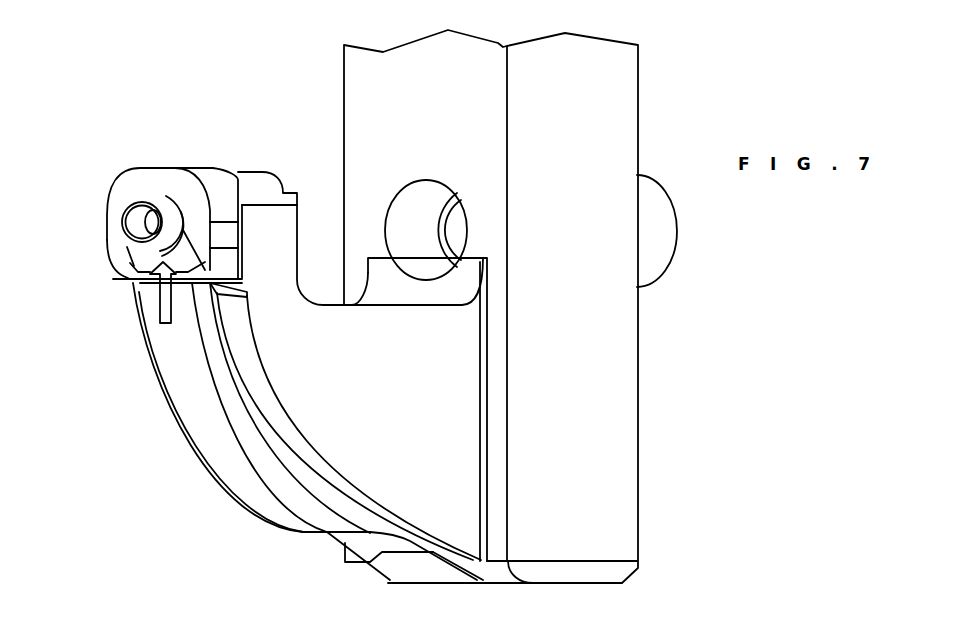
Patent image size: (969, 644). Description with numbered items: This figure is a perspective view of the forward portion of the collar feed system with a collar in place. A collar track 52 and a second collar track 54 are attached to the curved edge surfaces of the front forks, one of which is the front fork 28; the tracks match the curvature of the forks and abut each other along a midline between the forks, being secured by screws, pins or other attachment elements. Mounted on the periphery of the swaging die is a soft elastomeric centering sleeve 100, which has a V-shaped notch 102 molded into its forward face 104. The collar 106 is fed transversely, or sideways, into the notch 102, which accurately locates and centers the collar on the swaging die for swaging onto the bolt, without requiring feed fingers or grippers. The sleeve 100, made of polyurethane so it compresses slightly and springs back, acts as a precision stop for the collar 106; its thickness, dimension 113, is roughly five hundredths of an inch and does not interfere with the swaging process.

The front fork 28 is at (340, 452).
The collar track 52 is at (177, 382).
The collar track 54 is at (233, 388).
The centering sleeve 100 is at (195, 192).
The V-shaped notch 102 is at (143, 257).
The forward face 104 is at (123, 195).
The collar 106 is at (156, 203).
The thickness dimension of sleeve 113 is at (128, 258).